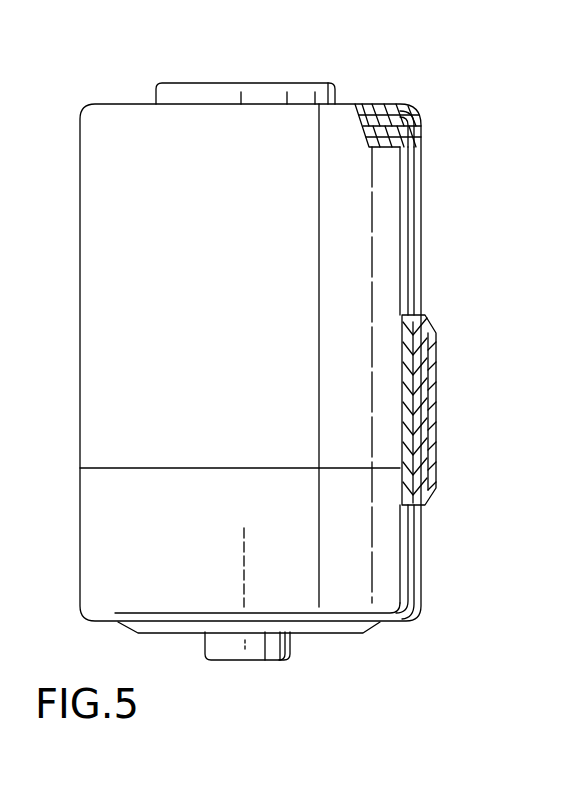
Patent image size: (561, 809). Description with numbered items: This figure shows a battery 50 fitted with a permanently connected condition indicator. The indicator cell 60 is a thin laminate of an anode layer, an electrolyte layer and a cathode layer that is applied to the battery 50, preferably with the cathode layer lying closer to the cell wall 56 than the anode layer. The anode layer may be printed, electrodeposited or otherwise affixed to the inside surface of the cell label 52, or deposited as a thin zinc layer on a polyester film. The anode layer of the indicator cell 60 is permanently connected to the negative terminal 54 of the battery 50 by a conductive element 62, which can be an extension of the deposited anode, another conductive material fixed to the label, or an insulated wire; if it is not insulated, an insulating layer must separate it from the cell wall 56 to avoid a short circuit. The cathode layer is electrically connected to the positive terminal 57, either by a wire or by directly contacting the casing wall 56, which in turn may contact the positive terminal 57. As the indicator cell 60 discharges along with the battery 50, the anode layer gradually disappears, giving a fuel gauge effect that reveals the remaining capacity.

The battery 50 is at (412, 620).
The cell label 52 is at (413, 106).
The negative terminal 54 is at (235, 83).
The cell wall 56 is at (380, 147).
The positive terminal 57 is at (290, 660).
The indicator cell 60 is at (418, 445).
The conductive element 62 is at (424, 141).